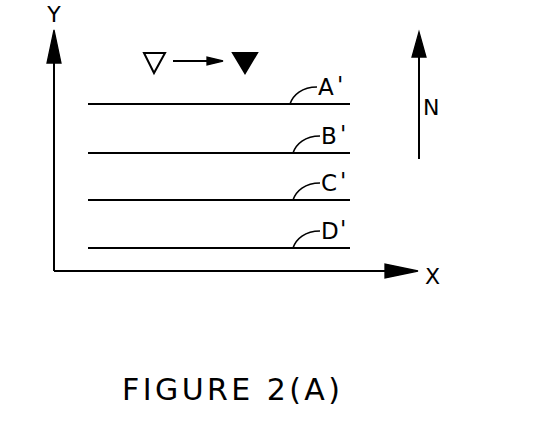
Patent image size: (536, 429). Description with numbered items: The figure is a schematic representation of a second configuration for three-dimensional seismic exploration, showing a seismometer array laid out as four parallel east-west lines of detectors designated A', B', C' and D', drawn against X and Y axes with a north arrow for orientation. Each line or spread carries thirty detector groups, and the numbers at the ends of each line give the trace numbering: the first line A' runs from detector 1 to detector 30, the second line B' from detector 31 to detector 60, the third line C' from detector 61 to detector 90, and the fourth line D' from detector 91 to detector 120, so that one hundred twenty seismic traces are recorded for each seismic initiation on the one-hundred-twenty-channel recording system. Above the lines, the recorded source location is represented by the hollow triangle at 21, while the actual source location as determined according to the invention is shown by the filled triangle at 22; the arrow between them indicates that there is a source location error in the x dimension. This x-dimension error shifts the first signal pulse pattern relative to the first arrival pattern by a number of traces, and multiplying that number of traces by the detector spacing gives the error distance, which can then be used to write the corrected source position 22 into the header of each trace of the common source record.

The recorded source location 21 is at (150, 53).
The actual source location 22 is at (243, 53).
The first row start index 1 is at (144, 104).
The first row end index 30 is at (300, 104).
The second row start index 31 is at (137, 153).
The second row end index 60 is at (300, 153).
The third row start index 61 is at (137, 200).
The third row end index 90 is at (300, 200).
The fourth row start index 91 is at (137, 248).
The fourth row end index 120 is at (309, 248).